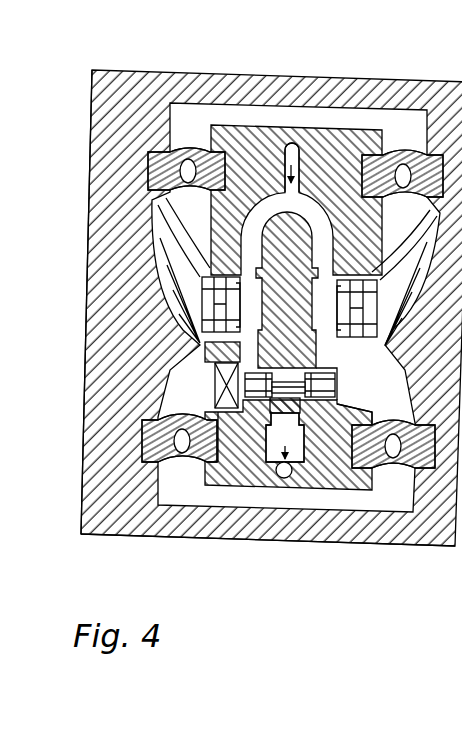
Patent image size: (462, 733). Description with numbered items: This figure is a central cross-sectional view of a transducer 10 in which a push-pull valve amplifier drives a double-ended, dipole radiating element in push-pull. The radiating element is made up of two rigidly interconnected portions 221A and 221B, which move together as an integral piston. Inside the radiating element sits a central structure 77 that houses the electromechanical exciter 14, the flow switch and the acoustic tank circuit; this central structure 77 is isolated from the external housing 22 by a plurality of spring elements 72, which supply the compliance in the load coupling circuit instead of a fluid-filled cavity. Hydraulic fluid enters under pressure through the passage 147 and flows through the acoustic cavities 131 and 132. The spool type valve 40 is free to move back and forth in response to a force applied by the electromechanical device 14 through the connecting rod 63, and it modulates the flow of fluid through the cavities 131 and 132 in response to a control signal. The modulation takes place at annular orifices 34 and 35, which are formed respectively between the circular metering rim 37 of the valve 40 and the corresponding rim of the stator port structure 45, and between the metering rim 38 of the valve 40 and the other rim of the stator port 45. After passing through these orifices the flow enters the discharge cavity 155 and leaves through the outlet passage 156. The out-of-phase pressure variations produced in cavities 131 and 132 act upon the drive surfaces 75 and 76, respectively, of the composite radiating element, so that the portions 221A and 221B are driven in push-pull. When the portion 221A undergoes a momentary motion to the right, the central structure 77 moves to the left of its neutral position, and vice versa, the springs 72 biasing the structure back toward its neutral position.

The transducer 10 is at (271, 275).
The housing block 22 is at (271, 291).
The portion of radiating element 221A is at (426, 493).
The portion of radiating element 221B is at (98, 158).
The spring elements 72 is at (190, 150).
The central structure 77 is at (252, 134).
The fluid passage 147 is at (285, 165).
The acoustic cavity 132 is at (268, 295).
The acoustic cavity 131 is at (335, 296).
The drive surface 76 is at (257, 318).
The drive surface 75 is at (336, 324).
The annular orifice 35 is at (265, 368).
The annular orifice 34 is at (307, 367).
The valve 40 is at (288, 411).
The metering rim 37 is at (294, 381).
The metering rim 38 is at (285, 407).
The electromechanical device 14 is at (226, 385).
The connecting rod 63 is at (243, 404).
The stator port structure 45 is at (313, 412).
The discharge cavity 155 is at (296, 441).
The outlet passage 156 is at (272, 485).